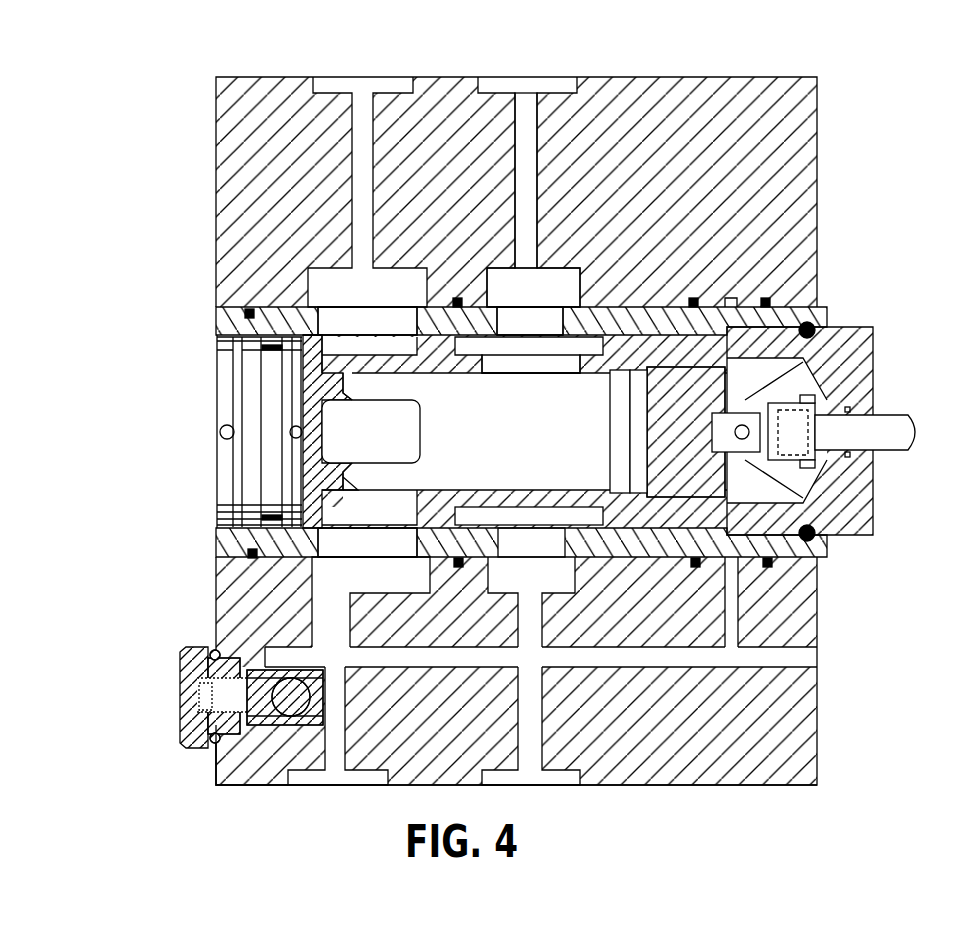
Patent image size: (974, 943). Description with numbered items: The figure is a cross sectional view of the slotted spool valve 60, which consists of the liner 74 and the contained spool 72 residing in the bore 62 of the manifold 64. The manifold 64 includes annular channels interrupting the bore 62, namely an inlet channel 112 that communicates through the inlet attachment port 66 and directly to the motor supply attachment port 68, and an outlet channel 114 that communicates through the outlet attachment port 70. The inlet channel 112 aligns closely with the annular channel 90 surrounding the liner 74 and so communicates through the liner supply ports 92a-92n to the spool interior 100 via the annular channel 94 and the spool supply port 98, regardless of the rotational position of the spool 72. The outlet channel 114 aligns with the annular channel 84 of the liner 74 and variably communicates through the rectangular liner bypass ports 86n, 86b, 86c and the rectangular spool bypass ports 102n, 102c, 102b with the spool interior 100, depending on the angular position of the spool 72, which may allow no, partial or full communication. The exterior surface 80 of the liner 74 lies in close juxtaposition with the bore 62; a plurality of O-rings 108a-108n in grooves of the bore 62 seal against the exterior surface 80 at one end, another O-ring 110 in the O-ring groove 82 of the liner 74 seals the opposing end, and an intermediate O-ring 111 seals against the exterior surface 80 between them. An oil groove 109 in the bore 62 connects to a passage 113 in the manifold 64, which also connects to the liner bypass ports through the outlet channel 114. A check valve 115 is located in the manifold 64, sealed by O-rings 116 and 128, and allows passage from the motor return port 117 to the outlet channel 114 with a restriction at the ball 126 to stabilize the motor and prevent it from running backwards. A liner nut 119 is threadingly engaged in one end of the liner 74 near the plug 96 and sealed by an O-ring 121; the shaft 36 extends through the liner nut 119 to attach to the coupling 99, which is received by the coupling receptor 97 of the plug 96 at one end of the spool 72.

The shaft 36 is at (883, 420).
The slotted spool valve 60 is at (217, 460).
The bore 62 is at (802, 560).
The manifold 64 is at (818, 122).
The inlet attachment port 66 is at (523, 85).
The motor supply attachment port 68 is at (540, 790).
The outlet attachment port 70 is at (327, 85).
The spool 72 is at (800, 348).
The liner 74 is at (215, 323).
The exterior surface 80 is at (655, 562).
The O-ring groove 82 is at (243, 550).
The annular channel 84 is at (345, 337).
The rectangular liner bypass port 86n is at (343, 320).
The rectangular liner bypass port 86b is at (343, 570).
The rectangular liner bypass port 86c is at (383, 438).
The annular channel 90 is at (555, 262).
The liner supply ports 92a-92n is at (530, 300).
The annular channel 94 is at (493, 351).
The plug 96 is at (712, 470).
The coupling receptor 97 is at (726, 381).
The spool supply port 98 is at (553, 368).
The coupling 99 is at (783, 453).
The spool interior 100 is at (518, 446).
The rectangular spool bypass port 102n is at (347, 347).
The rectangular spool bypass port 102c is at (407, 423).
The rectangular spool bypass port 102b is at (373, 517).
The O-rings 108a-108n is at (733, 600).
The oil groove 109 is at (737, 298).
The O-ring 110 is at (240, 554).
The intermediate O-ring 111 is at (458, 567).
The inlet channel 112 is at (542, 270).
The passage 113 is at (812, 655).
The outlet channel 114 is at (283, 583).
The check valve 115 is at (188, 733).
The O-ring 116 is at (213, 745).
The motor return port 117 is at (316, 780).
The liner nut 119 is at (868, 535).
The O-ring 121 is at (828, 324).
The ball 126 is at (267, 695).
The O-ring 128 is at (262, 783).